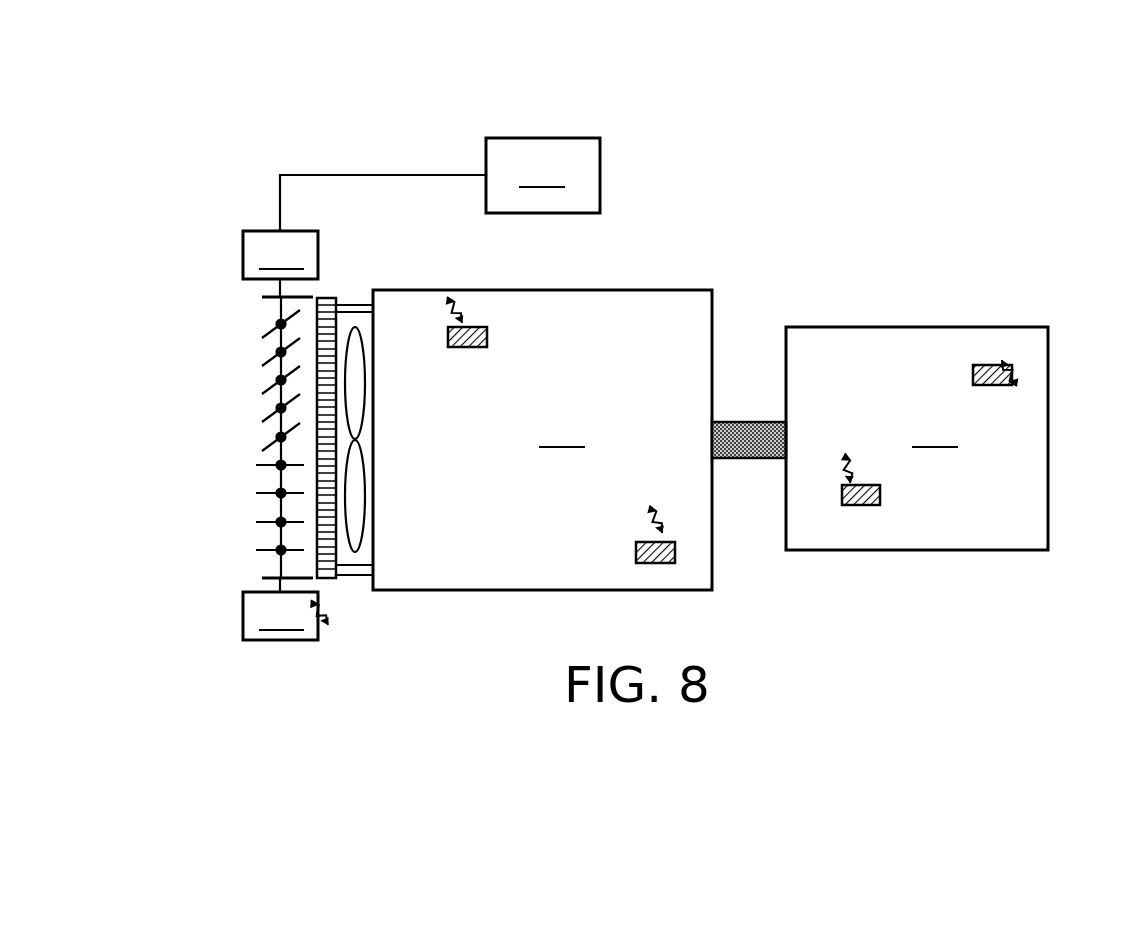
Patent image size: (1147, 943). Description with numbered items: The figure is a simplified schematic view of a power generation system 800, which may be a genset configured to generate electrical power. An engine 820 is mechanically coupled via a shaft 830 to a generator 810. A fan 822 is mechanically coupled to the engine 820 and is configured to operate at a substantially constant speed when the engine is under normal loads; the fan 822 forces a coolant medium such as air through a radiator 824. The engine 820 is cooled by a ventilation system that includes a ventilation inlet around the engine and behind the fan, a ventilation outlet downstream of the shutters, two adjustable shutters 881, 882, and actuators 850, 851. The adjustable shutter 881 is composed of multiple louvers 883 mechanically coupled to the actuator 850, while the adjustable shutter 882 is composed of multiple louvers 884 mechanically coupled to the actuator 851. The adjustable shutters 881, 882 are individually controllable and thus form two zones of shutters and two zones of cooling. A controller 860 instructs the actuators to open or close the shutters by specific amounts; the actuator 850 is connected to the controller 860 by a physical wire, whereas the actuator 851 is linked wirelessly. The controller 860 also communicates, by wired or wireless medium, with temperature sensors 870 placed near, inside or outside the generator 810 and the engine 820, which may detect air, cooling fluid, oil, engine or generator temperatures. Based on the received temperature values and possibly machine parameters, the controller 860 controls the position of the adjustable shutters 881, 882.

The power generation system 800 is at (1015, 85).
The generator 810 is at (870, 505).
The engine 820 is at (542, 440).
The fan 822 is at (355, 332).
The radiator 824 is at (330, 555).
The shaft 830 is at (750, 420).
The actuator 850 is at (280, 264).
The actuator 851 is at (287, 609).
The controller 860 is at (440, 184).
The temperature sensor 870 is at (636, 553).
The adjustable shutter 881 is at (208, 437).
The adjustable shutter 882 is at (204, 533).
The louver 883 is at (268, 362).
The louver 884 is at (262, 553).